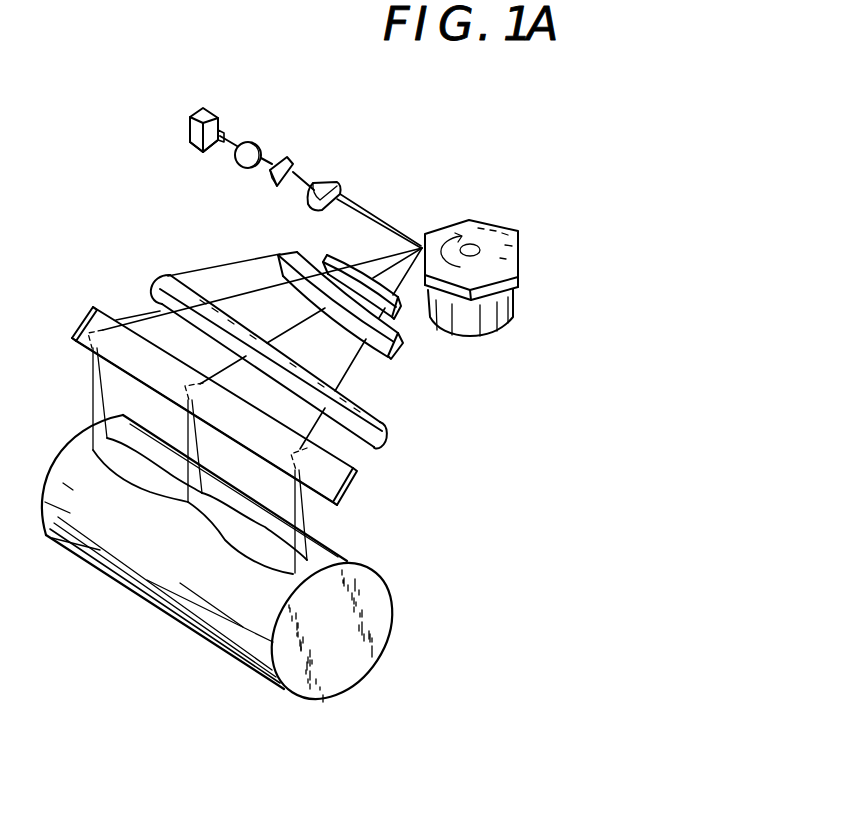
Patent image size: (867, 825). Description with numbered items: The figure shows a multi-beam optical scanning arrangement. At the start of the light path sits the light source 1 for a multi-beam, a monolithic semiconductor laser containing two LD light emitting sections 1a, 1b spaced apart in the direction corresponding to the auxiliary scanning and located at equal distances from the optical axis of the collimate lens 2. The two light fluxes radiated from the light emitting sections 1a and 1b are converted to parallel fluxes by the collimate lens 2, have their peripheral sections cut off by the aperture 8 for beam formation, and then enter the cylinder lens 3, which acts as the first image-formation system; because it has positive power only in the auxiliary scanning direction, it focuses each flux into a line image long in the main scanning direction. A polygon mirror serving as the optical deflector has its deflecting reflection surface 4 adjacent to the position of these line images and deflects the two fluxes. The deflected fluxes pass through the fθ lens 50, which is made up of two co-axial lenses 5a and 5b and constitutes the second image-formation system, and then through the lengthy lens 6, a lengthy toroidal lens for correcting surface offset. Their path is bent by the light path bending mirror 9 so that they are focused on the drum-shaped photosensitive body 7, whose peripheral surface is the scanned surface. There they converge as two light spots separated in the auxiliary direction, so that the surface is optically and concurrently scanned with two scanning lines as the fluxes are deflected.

The light source for a multi-beam 1 is at (191, 116).
The LD light emitting section 1a is at (218, 124).
The LD light emitting section 1b is at (203, 153).
The collimate lens 2 is at (257, 155).
The aperture for beam formation 8 is at (294, 166).
The cylinder lens 3 is at (344, 184).
The deflecting reflection surface 4 is at (421, 246).
The co-axial lens 5a is at (399, 306).
The co-axial lens 5b is at (402, 352).
The fθ lens 50 is at (394, 342).
The lengthy lens 6 is at (390, 436).
The light path bending mirror 9 is at (334, 479).
The photosensitive body 7 is at (337, 546).